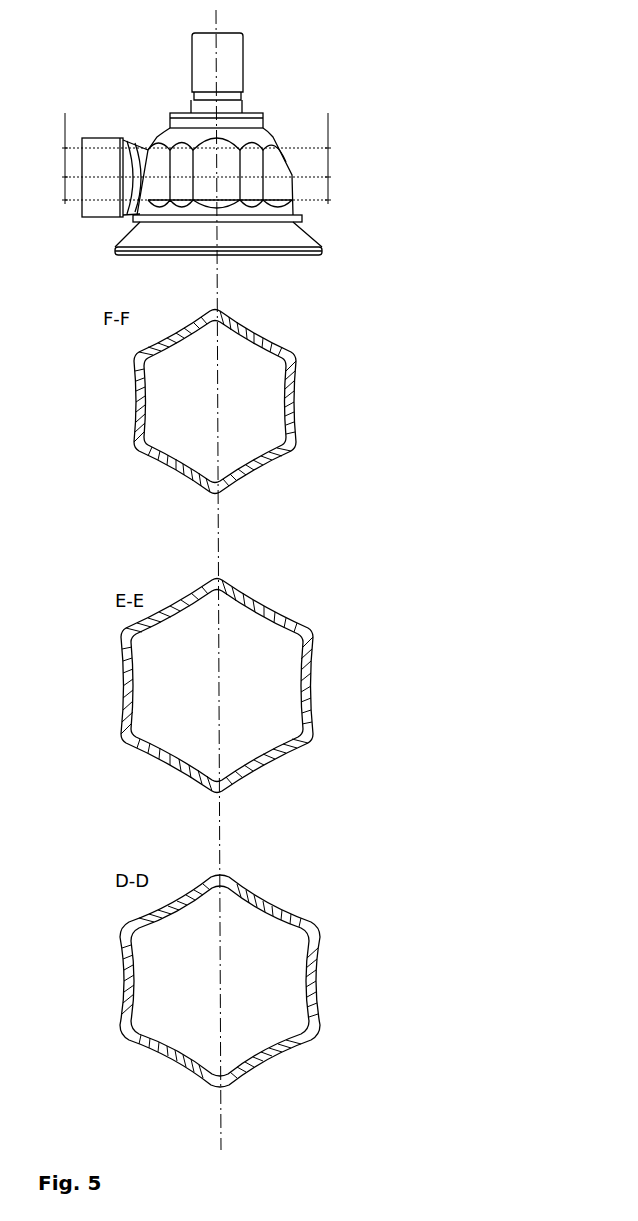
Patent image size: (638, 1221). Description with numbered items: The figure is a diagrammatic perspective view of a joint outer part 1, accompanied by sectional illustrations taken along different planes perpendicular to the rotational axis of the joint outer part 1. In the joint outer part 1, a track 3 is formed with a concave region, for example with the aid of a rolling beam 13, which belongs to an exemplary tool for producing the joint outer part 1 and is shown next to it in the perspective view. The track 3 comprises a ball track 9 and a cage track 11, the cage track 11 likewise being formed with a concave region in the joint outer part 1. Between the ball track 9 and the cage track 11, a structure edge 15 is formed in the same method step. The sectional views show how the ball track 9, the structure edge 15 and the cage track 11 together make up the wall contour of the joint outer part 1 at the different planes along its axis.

The joint outer part 1 is at (393, 106).
The track 3 is at (299, 607).
The ball track 9 is at (287, 162).
The cage track 11 is at (290, 178).
The rolling beam 13 is at (108, 138).
The structure edge 15 is at (256, 188).